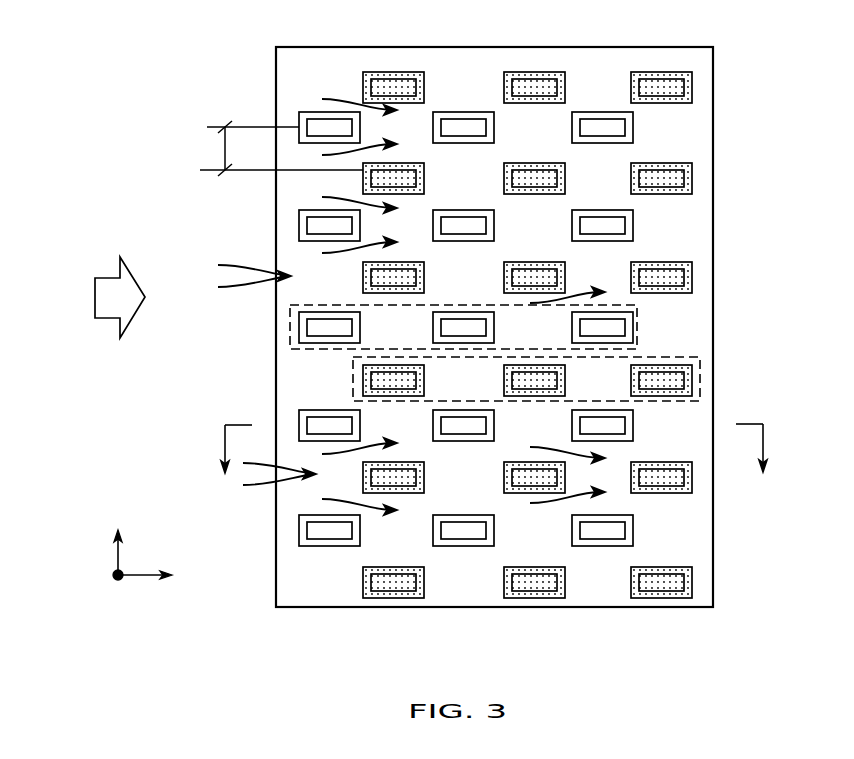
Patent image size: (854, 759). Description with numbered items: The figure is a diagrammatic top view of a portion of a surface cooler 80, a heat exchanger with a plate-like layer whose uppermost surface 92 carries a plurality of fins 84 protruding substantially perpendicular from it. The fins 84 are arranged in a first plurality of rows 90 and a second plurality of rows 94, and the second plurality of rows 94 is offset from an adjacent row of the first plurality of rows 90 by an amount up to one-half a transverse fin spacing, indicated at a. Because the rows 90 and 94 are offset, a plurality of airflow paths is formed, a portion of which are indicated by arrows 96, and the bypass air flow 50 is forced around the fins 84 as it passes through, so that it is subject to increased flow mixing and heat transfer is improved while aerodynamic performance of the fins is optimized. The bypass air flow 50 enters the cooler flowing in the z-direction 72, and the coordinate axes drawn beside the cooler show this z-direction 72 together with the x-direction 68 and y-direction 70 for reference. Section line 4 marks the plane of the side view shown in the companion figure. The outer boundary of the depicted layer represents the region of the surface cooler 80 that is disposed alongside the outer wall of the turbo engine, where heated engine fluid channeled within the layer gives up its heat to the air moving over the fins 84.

The surface cooler 80 is at (237, 70).
The uppermost surface 92 is at (705, 122).
The fins 84 is at (565, 80).
The second plurality of rows 94 is at (638, 320).
The first plurality of rows 90 is at (700, 380).
The airflow paths 96 is at (230, 289).
The transverse fin spacing offset a is at (225, 148).
The section line 4- 4 is at (493, 464).
The bypass air flow 50 is at (112, 319).
The x-direction 68 is at (116, 556).
The y-direction 70 is at (112, 579).
The z-direction 72 is at (147, 577).